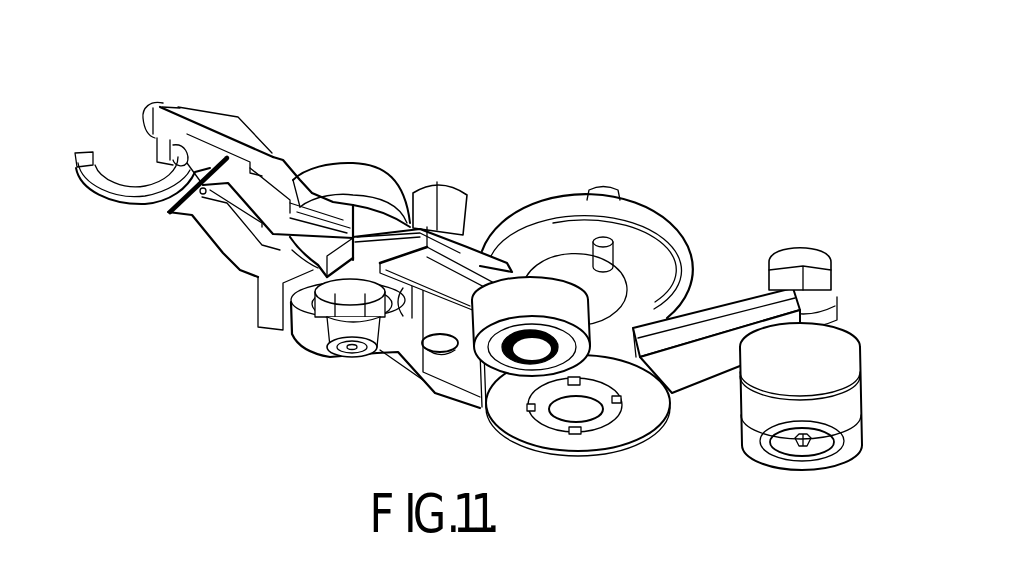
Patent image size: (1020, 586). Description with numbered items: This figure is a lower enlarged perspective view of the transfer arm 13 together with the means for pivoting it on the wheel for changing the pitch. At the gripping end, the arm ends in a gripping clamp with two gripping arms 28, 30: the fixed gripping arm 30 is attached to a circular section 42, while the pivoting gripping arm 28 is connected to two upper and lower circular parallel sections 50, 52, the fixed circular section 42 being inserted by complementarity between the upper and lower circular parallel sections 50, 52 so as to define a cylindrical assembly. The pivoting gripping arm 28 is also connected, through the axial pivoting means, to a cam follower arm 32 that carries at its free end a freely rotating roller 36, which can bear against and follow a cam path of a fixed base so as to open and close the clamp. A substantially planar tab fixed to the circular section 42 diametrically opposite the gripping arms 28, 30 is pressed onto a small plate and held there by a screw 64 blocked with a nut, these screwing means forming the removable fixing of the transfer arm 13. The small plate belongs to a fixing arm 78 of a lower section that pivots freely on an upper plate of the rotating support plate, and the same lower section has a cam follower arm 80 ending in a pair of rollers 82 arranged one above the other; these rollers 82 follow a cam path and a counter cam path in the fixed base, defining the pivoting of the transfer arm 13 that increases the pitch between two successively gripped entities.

The transfer arm 13 is at (256, 112).
The gripping arm 28 is at (100, 190).
The gripping arm 30 is at (167, 130).
The cam follower arm 32 is at (457, 260).
The roller 36 is at (525, 298).
The circular section 42 is at (365, 220).
The upper circular parallel section 50 is at (377, 185).
The lower circular parallel section 52 is at (305, 273).
The screw 64 is at (453, 203).
The fixing arm 78 is at (398, 360).
The cam follower arm 80 is at (718, 323).
The rollers 82 is at (833, 358).